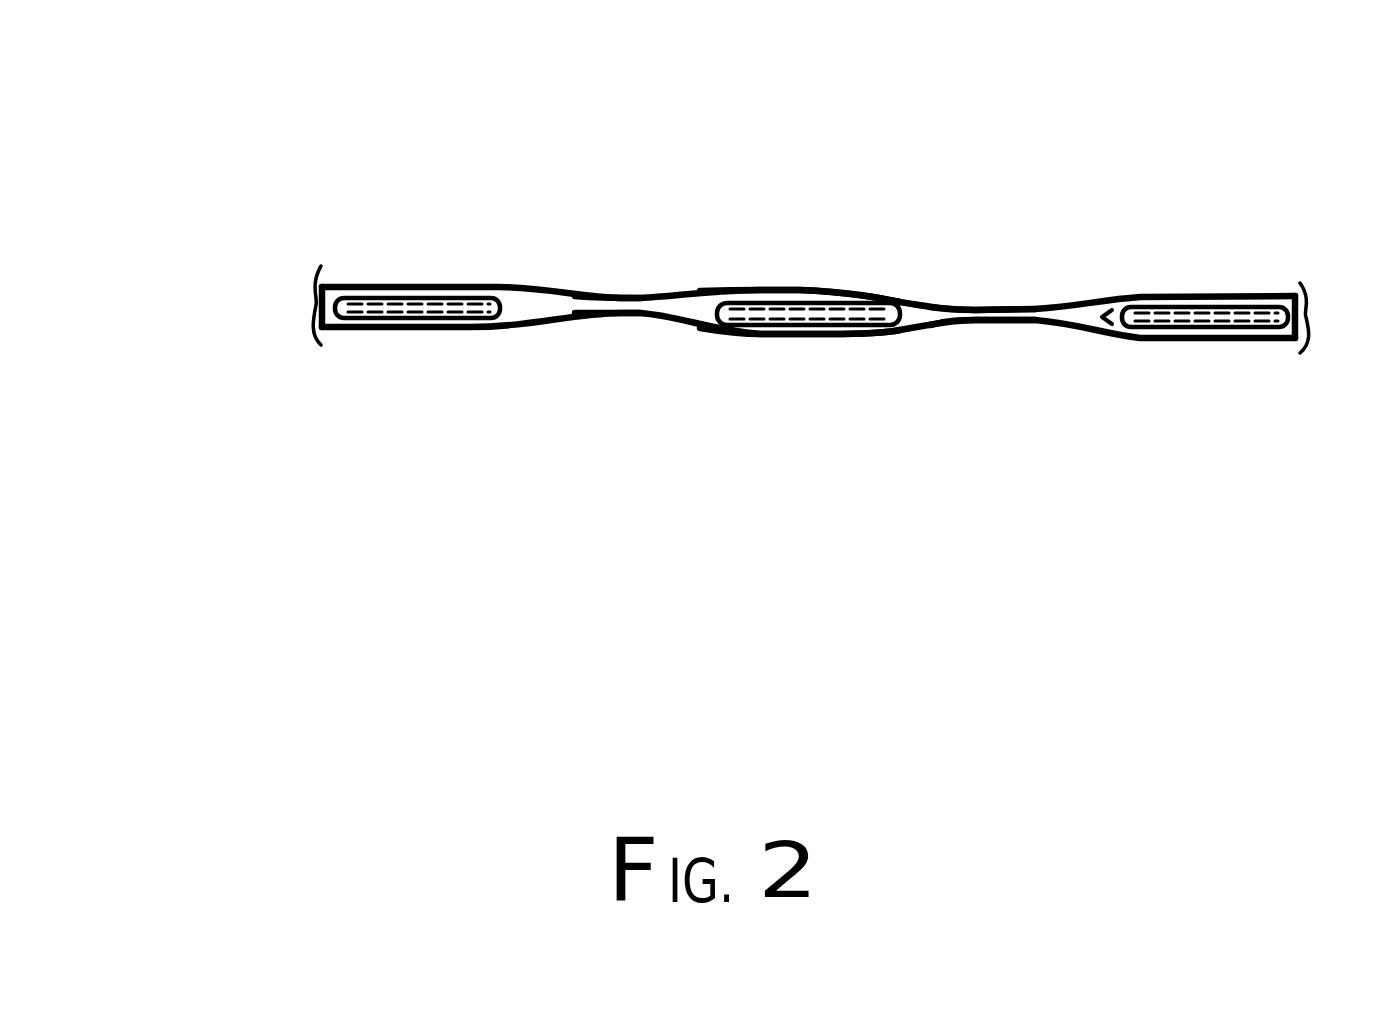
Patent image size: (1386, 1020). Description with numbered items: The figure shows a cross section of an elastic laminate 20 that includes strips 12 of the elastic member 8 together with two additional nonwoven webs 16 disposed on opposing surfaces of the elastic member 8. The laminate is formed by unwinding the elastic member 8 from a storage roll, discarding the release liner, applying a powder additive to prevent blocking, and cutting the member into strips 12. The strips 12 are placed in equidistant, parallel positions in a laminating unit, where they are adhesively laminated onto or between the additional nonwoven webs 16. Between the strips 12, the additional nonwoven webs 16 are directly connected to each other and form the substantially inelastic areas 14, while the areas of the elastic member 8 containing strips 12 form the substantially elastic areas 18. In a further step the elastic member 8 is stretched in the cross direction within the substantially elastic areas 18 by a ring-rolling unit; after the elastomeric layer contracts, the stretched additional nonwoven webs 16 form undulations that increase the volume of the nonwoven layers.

The elastic laminate 20 is at (382, 258).
The strips 12 is at (462, 306).
The substantially inelastic areas 14 is at (598, 326).
The elastic member 8 is at (765, 330).
The substantially elastic areas 18 is at (807, 282).
The additional nonwoven webs 16 is at (932, 292).